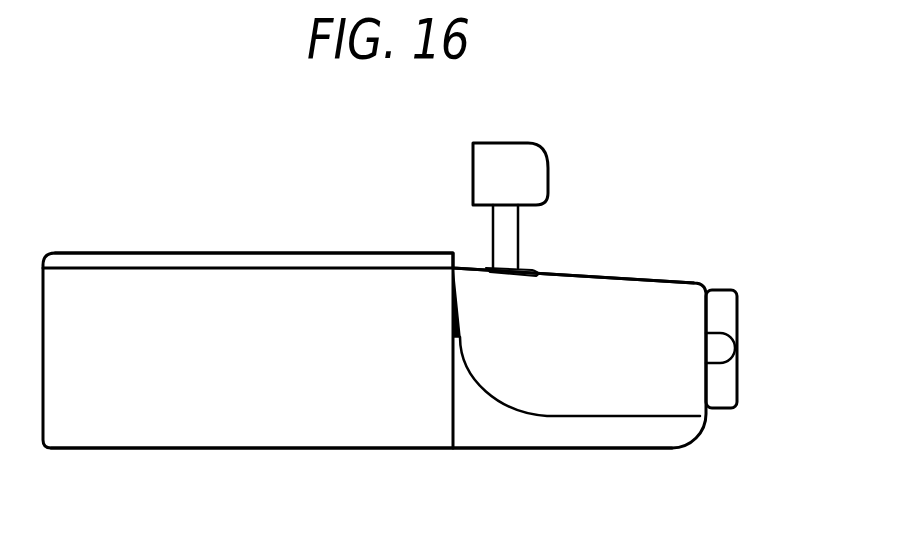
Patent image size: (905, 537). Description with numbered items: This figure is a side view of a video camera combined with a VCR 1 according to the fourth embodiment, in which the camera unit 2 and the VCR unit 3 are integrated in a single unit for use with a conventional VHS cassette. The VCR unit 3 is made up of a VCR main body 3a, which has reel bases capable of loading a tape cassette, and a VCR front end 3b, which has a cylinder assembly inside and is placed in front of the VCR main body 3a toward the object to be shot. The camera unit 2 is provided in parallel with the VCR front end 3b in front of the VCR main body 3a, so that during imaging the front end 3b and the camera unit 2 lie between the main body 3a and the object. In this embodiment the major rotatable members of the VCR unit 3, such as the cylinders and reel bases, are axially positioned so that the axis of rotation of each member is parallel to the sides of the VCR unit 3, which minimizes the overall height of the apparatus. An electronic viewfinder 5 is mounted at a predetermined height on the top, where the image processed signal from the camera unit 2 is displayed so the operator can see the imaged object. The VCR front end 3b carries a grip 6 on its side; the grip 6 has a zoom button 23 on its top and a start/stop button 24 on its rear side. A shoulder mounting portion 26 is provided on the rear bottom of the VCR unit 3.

The video camera combined with a VCR 1 is at (235, 240).
The camera unit 2 is at (746, 309).
The VCR unit 3 is at (287, 464).
The VCR main body 3a is at (105, 436).
The VCR front end 3b is at (651, 395).
The electronic viewfinder 5 is at (510, 152).
The grip 6 is at (557, 392).
The zoom button 23 is at (528, 266).
The start/stop button 24 is at (456, 337).
The shoulder mounting portion 26 is at (195, 450).